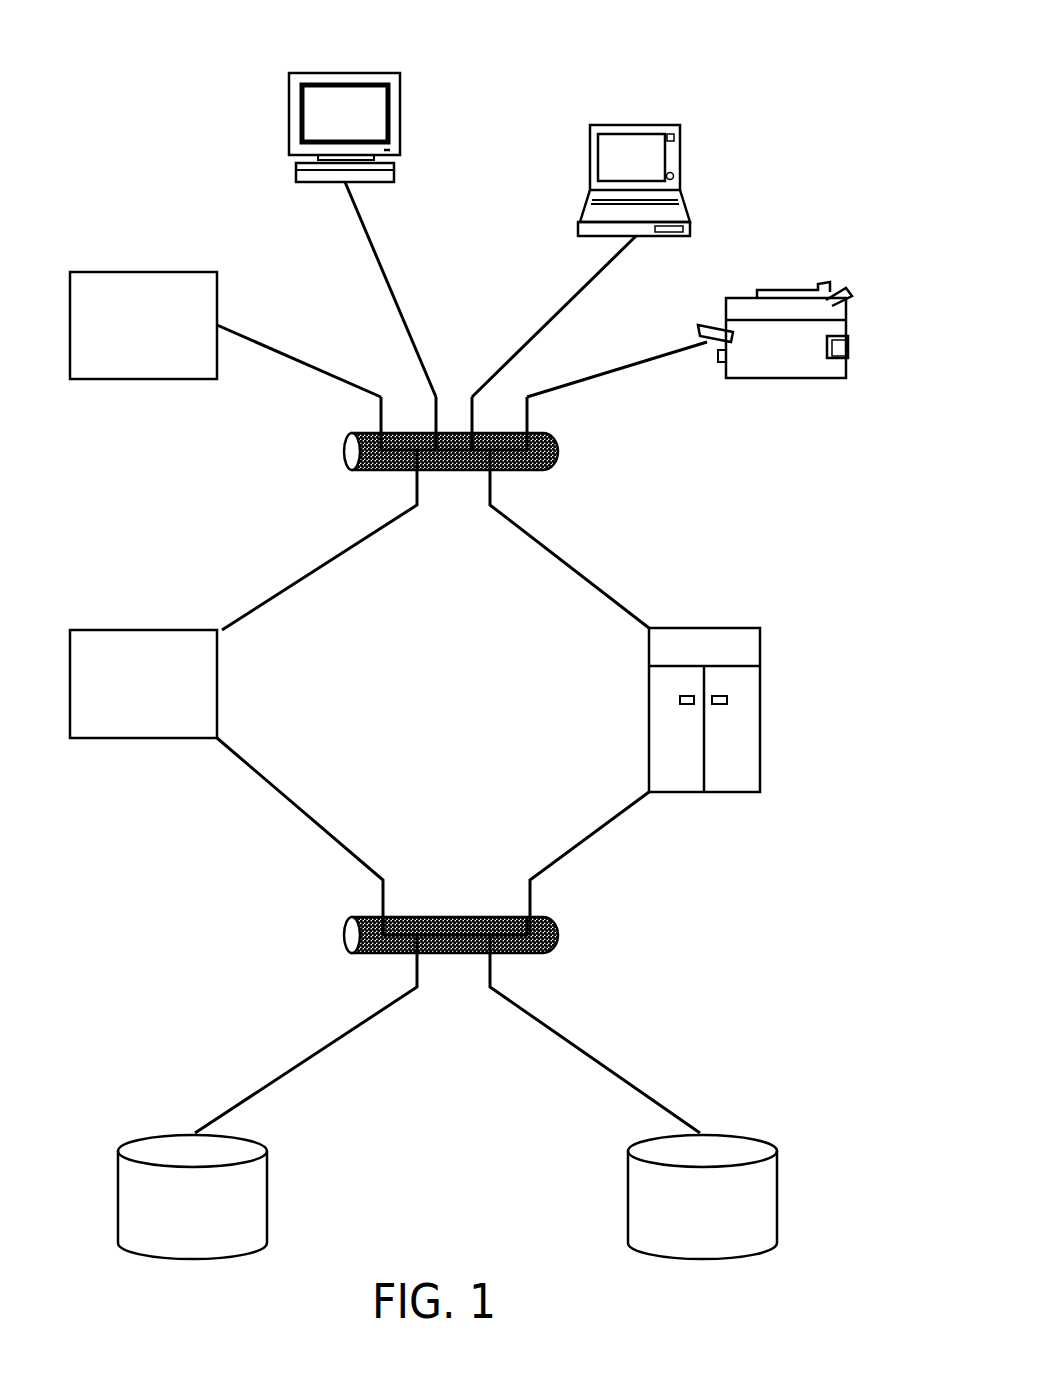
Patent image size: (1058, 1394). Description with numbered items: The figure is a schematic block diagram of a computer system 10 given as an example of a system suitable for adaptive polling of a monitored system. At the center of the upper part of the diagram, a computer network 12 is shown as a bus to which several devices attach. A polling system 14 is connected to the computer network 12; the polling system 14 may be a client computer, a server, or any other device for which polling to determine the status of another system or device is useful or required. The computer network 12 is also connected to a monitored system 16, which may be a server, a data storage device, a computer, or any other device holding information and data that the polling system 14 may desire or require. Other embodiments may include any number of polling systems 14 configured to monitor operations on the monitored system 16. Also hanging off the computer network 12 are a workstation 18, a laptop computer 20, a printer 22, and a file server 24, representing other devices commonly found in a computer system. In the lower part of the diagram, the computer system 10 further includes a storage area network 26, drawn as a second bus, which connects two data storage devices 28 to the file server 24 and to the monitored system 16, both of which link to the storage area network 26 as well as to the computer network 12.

The computer system 10 is at (148, 101).
The computer network 12 is at (560, 452).
The polling system 14 is at (217, 296).
The monitored system 16 is at (217, 697).
The workstation 18 is at (400, 125).
The laptop computer 20 is at (680, 160).
The printer 22 is at (846, 328).
The file server 24 is at (760, 714).
The storage area network 26 is at (560, 938).
The data storage devices 28 is at (267, 1196).